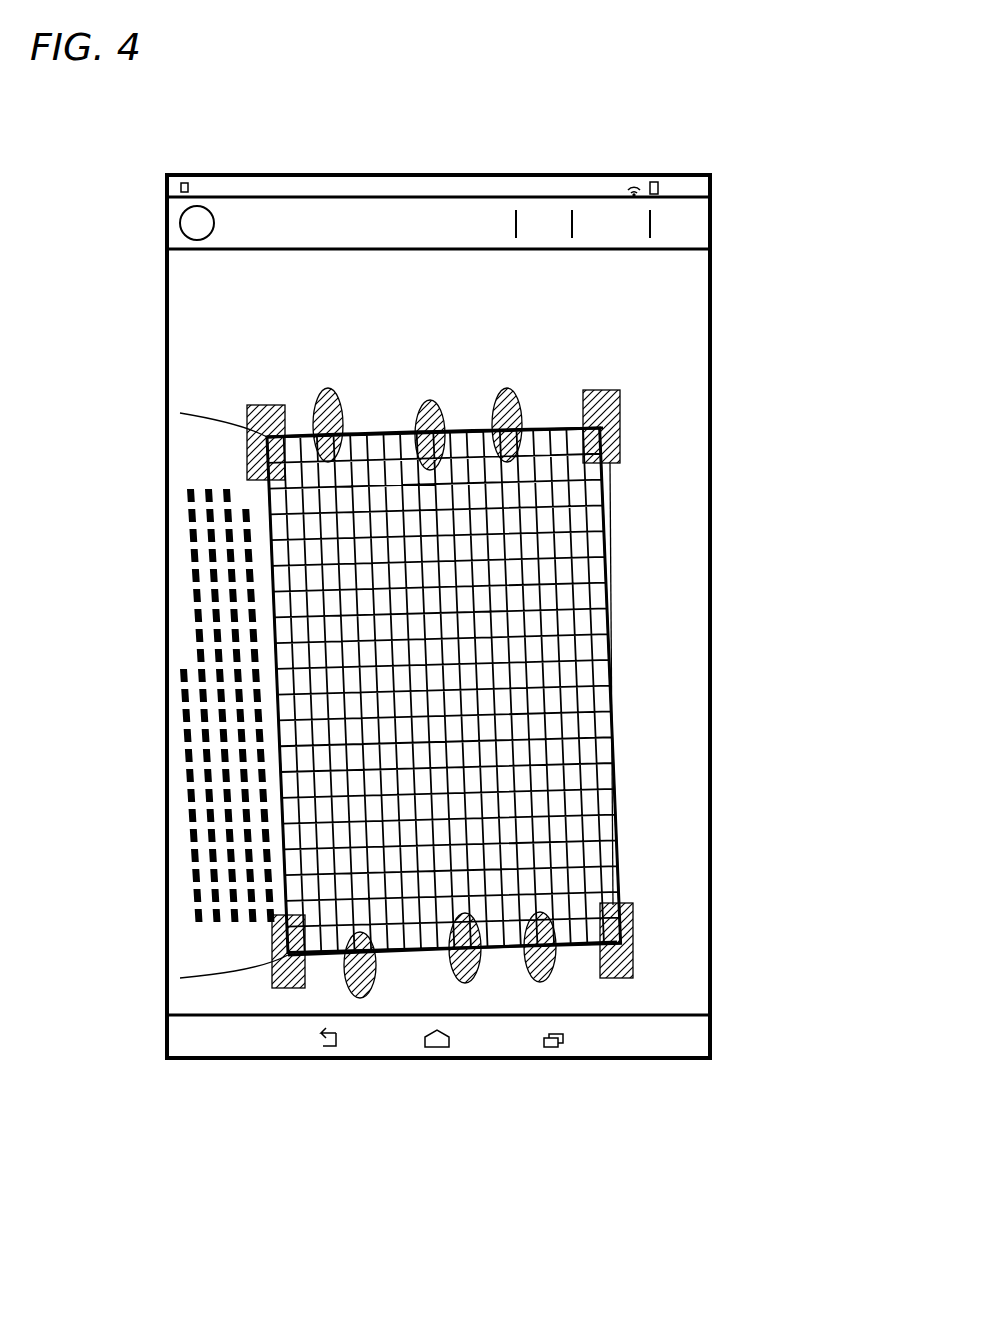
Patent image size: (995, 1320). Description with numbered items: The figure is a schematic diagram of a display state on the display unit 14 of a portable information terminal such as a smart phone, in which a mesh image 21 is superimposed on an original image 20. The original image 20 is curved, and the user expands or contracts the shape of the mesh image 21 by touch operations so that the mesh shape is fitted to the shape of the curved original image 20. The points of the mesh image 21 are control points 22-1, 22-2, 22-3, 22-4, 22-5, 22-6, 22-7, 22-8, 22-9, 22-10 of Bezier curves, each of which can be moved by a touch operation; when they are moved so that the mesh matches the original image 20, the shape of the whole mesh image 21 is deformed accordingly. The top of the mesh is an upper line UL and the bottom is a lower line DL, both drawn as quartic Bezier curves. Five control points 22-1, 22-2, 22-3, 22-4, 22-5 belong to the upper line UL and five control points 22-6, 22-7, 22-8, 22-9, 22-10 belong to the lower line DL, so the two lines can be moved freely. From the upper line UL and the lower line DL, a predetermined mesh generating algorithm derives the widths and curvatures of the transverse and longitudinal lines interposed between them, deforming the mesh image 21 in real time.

The display unit 14 is at (517, 173).
The original image 20 is at (213, 418).
The mesh image 21 is at (605, 545).
The control point 22-1 is at (298, 370).
The control point 22-2 is at (335, 390).
The control point 22-3 is at (463, 365).
The control point 22-4 is at (505, 390).
The control point 22-5 is at (635, 360).
The control point 22-6 is at (288, 988).
The control point 22-7 is at (360, 998).
The control point 22-8 is at (465, 983).
The control point 22-9 is at (540, 982).
The control point 22-10 is at (617, 978).
The upper line UL is at (546, 418).
The lower line DL is at (417, 962).